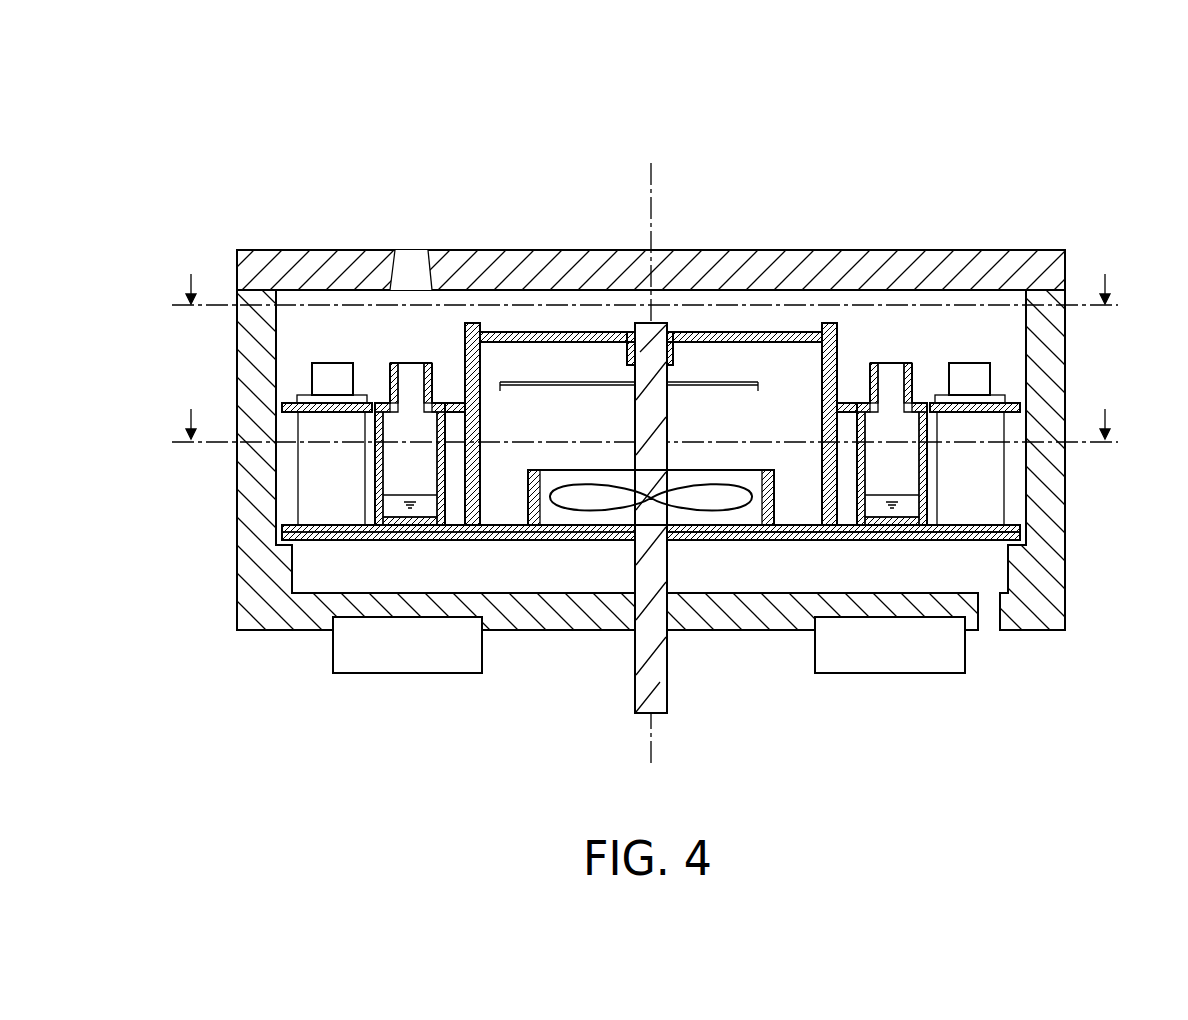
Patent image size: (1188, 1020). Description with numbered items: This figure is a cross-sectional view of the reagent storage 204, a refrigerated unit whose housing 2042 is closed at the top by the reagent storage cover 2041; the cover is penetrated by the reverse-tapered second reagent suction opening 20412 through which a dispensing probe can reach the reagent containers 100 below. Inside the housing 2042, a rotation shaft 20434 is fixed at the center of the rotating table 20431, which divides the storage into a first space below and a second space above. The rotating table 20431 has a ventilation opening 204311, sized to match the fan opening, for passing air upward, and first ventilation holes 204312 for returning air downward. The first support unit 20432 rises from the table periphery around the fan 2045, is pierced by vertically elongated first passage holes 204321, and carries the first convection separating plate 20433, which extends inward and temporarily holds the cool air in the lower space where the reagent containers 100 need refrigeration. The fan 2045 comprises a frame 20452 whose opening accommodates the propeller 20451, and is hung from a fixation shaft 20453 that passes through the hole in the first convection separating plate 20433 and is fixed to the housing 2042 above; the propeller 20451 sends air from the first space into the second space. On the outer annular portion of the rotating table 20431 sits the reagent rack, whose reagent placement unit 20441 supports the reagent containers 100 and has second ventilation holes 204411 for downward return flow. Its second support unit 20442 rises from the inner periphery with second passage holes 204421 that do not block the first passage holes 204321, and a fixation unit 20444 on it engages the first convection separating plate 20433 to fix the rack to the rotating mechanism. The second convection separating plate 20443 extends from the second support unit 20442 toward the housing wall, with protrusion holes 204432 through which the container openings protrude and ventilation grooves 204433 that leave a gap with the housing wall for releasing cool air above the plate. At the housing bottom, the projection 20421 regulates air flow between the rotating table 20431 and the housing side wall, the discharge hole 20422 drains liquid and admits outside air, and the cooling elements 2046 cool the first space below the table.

The reagent storage 204 is at (652, 426).
The reagent storage cover 2041 is at (651, 231).
The second reagent suction opening 20412 is at (412, 262).
The housing 2042 is at (652, 520).
The projection 20421 is at (290, 573).
The discharge hole 20422 is at (988, 622).
The rotating table 20431 is at (733, 622).
The ventilation opening 204311 is at (582, 545).
The first ventilation hole 204312 is at (982, 541).
The first passage hole 204321 is at (764, 545).
The first support unit 20432 is at (822, 372).
The first convection separating plate 20433 is at (496, 330).
The rotation shaft 20434 is at (655, 707).
The fan 2045 is at (637, 489).
The propeller 20451 is at (586, 490).
The frame 20452 is at (723, 468).
The fixation shaft 20453 is at (641, 330).
The reagent placement unit 20441 is at (1061, 468).
The second ventilation hole 204411 is at (974, 523).
The second support unit 20442 is at (651, 460).
The second passage hole 204421 is at (845, 500).
The second convection separating plate 20443 is at (652, 353).
The protrusion hole 204432 is at (931, 400).
The ventilation groove 204433 is at (287, 400).
The fixation unit 20444 is at (830, 405).
The cooling element 2046 is at (407, 675).
The reagent container 100 is at (333, 362).